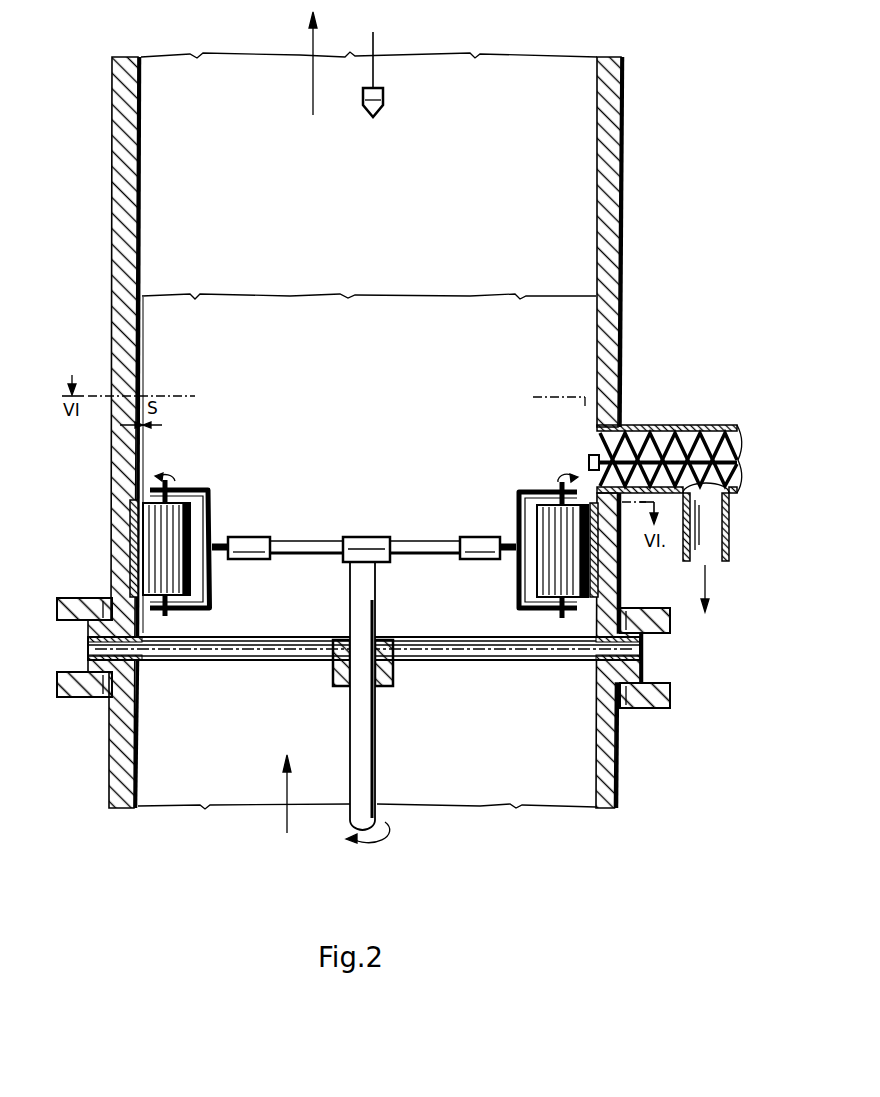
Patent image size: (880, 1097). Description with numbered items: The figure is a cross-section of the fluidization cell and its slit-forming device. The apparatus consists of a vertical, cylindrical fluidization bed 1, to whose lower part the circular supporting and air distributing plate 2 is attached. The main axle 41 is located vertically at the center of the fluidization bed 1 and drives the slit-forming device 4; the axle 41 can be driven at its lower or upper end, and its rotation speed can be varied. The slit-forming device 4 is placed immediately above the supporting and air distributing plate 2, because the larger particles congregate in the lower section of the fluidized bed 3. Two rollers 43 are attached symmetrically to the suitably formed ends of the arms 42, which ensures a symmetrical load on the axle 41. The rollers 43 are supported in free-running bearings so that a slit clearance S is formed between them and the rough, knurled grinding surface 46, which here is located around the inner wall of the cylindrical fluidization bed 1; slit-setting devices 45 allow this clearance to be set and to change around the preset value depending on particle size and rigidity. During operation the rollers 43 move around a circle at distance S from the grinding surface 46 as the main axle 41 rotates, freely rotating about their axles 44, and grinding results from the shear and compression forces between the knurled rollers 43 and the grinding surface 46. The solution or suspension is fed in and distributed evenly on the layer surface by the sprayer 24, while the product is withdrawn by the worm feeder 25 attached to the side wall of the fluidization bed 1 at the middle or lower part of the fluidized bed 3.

The fluidization bed 1 is at (125, 136).
The supporting and air distributing plate 2 is at (193, 650).
The fluidized bed 3 is at (410, 297).
The slit-forming device 4 is at (362, 530).
The sprayer 24 is at (383, 97).
The worm feeder 25 is at (668, 432).
The main axle 41 is at (373, 748).
The arms 42 is at (296, 545).
The rollers 43 is at (150, 530).
The axles 44 is at (152, 480).
The slit-setting devices 45 is at (246, 545).
The grinding surface 46 is at (130, 572).